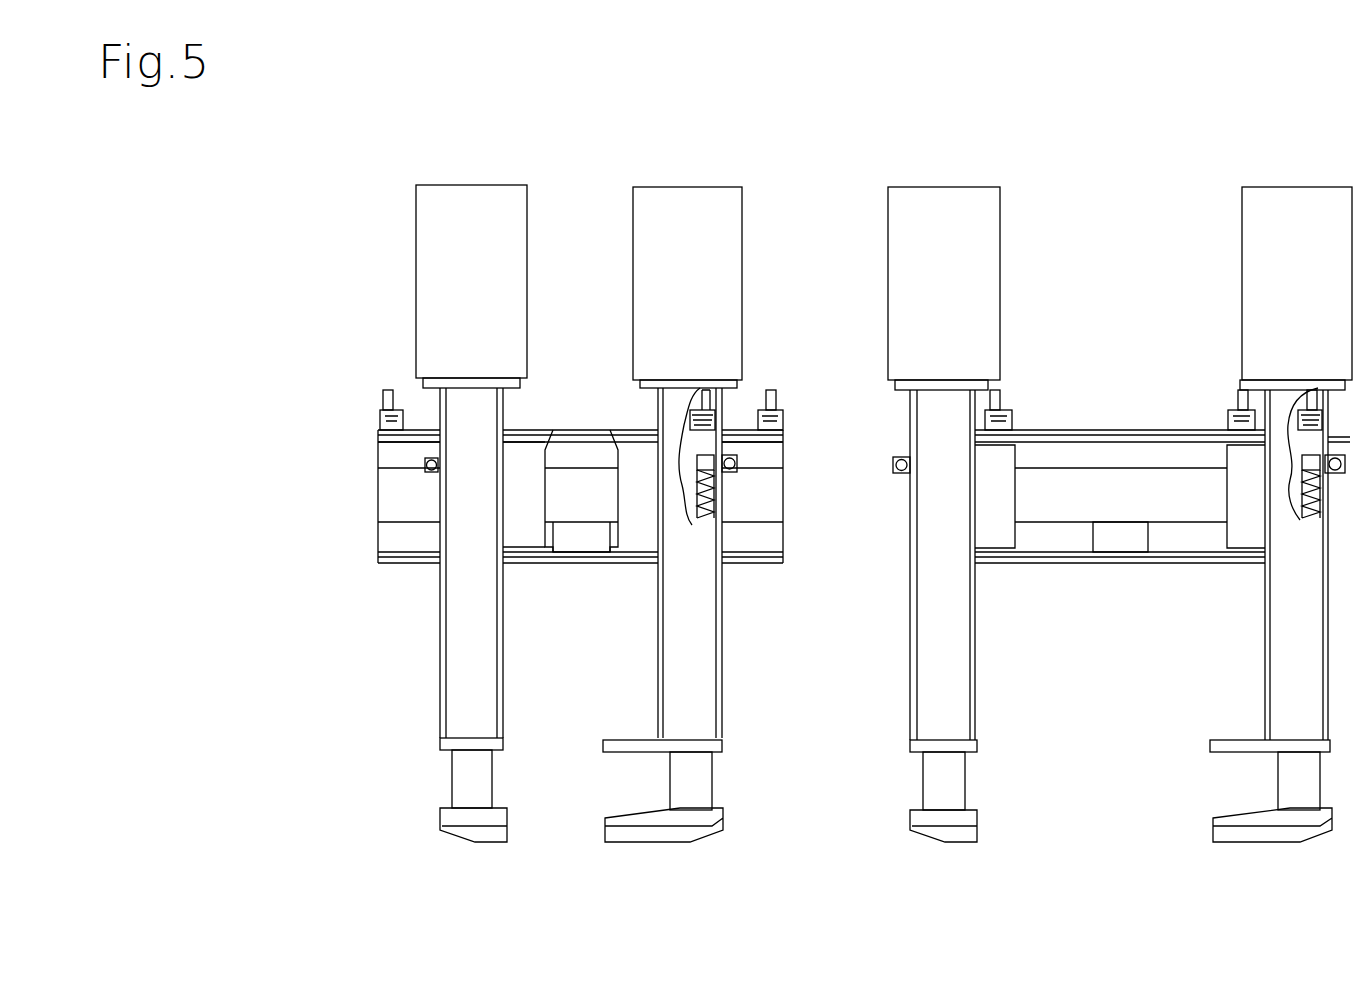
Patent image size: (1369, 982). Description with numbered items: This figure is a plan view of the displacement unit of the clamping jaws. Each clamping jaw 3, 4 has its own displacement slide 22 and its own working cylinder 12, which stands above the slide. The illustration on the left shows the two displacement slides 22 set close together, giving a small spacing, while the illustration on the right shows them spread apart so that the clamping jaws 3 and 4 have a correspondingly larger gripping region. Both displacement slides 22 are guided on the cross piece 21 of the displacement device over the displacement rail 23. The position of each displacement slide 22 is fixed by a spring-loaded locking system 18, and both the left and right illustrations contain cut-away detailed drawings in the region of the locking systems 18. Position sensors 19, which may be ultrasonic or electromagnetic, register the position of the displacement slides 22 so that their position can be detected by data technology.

The clamping jaw 3 is at (727, 831).
The clamping jaw 4 is at (434, 822).
The working cylinder 12 is at (530, 311).
The locking system 18 is at (736, 472).
The position sensor 19 is at (724, 391).
The cross piece 21 is at (578, 566).
The displacement slide 22 is at (554, 436).
The displacement rail 23 is at (410, 523).